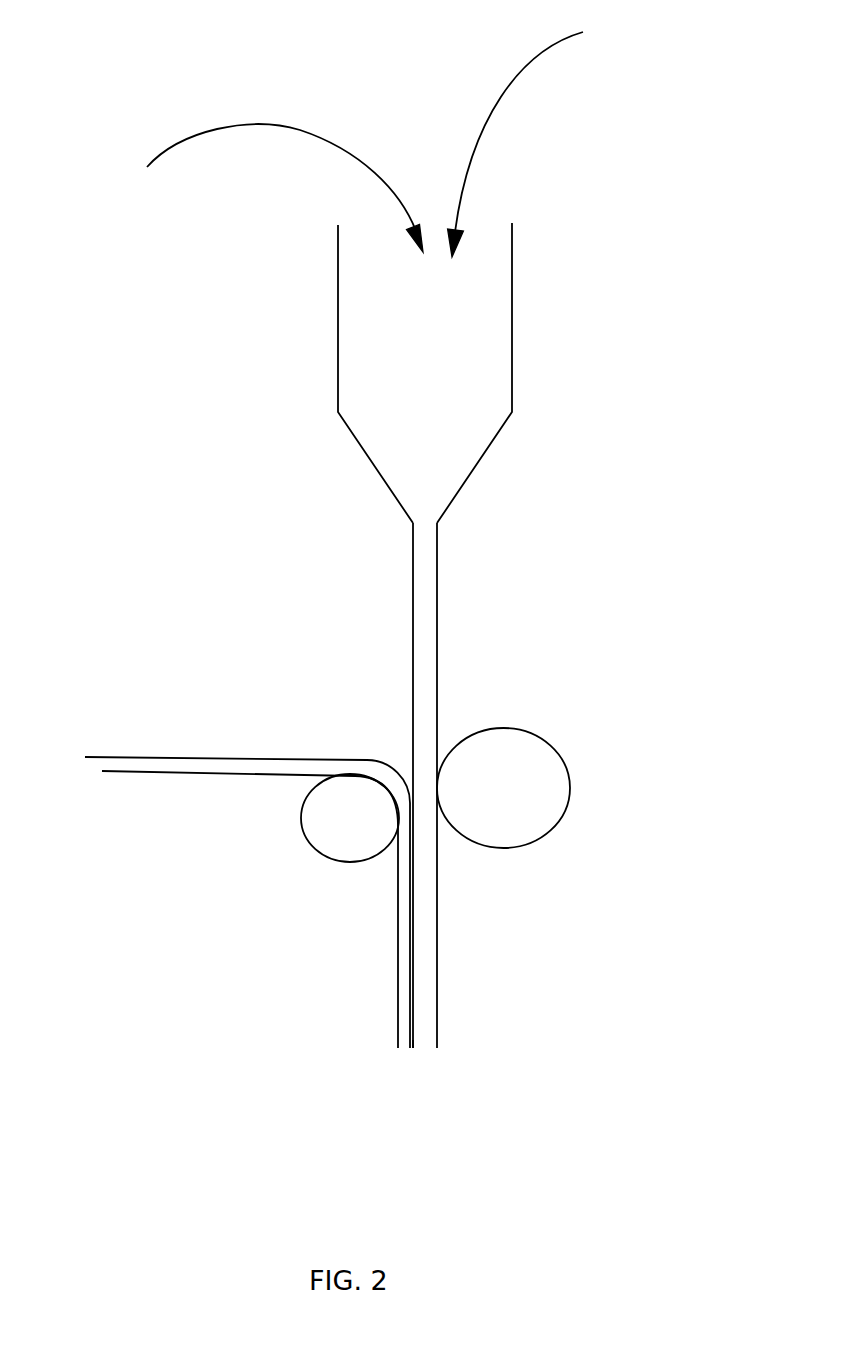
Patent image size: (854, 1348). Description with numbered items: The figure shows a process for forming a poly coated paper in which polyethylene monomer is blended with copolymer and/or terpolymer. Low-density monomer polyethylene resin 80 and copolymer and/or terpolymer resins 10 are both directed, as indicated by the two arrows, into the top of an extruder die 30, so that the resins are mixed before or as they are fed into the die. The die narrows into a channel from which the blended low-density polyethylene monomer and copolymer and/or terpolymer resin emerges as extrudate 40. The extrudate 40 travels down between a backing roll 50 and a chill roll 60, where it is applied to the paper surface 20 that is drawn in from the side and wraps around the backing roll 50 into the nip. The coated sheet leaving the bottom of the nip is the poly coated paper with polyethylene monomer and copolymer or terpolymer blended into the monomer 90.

The copolymer and/or terpolymer resins 10 is at (275, 188).
The paper surface 20 is at (108, 757).
The extruder die 30 is at (513, 298).
The extrudate 40 is at (422, 593).
The backing roll 50 is at (305, 843).
The chill roll 60 is at (553, 827).
The low-density monomer polyethylene resin 80 is at (536, 135).
The poly coated paper with polyethylene monomer and copolymer or terpolymer blended 90 is at (413, 1048).